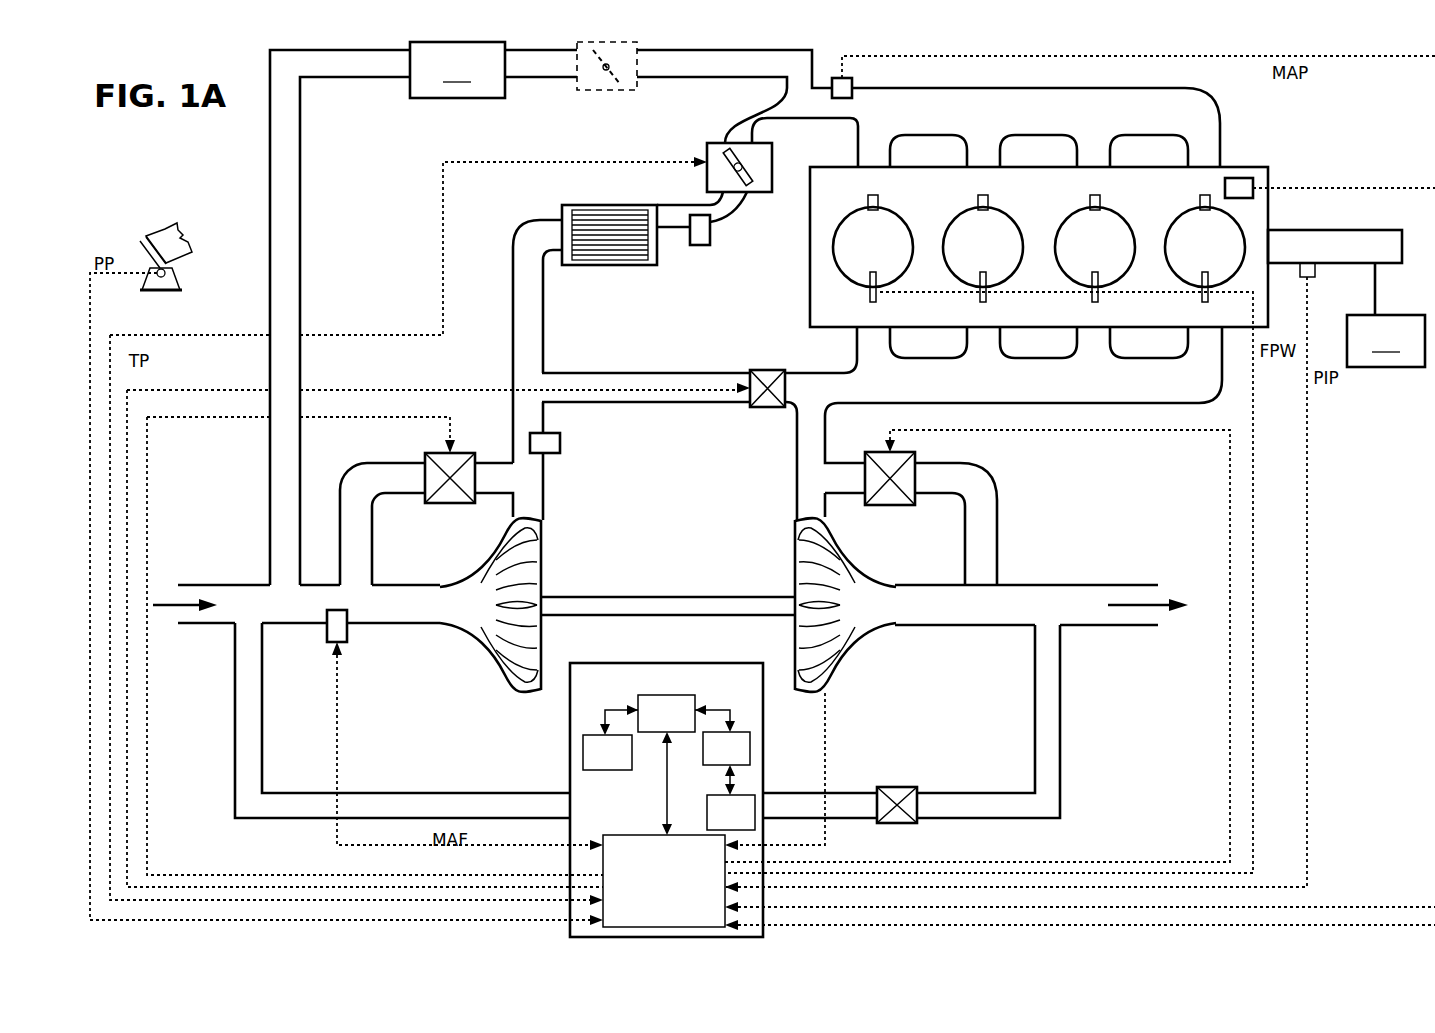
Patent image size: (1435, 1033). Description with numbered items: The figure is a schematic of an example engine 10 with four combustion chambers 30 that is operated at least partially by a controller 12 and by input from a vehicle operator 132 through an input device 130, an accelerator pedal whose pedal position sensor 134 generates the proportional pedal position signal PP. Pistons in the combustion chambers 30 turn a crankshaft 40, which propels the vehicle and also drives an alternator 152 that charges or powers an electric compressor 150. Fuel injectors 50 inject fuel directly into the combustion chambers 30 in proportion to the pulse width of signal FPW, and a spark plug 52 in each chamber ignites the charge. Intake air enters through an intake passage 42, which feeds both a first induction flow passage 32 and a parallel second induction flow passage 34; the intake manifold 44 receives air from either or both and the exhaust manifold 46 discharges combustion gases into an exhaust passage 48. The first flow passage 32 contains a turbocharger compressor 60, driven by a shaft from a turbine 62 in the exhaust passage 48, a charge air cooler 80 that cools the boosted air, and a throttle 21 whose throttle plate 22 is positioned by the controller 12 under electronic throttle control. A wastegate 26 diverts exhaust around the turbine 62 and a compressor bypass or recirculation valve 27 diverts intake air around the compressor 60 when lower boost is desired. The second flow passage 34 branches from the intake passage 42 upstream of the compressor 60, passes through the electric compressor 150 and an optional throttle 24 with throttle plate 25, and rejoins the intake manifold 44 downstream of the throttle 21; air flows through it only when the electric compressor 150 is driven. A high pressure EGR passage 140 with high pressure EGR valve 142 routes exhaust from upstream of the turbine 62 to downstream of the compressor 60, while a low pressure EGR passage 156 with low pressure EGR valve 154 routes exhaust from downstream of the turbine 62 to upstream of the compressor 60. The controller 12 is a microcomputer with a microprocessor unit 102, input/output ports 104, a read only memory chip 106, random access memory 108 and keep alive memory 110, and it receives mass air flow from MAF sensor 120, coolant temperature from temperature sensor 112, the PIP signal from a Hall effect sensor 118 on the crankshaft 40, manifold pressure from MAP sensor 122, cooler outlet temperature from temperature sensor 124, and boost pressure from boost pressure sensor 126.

The engine 10 is at (1127, 192).
The controller 12 is at (597, 815).
The throttle 21 is at (717, 142).
The throttle plate 22 is at (755, 180).
The throttle 24 is at (577, 82).
The throttle plate 25 is at (637, 88).
The wastegate 26 is at (915, 463).
The compressor bypass or recirculation valve 27 is at (425, 462).
The combustion chambers 30 is at (862, 257).
The first induction flow passage 32 is at (543, 342).
The second induction flow passage 34 is at (302, 263).
The crankshaft 40 is at (1283, 230).
The intake passage 42 is at (223, 615).
The intake manifold 44 is at (886, 120).
The exhaust manifold 46 is at (857, 393).
The exhaust passage 48 is at (938, 615).
The fuel injectors 50 is at (870, 298).
The spark plug 52 is at (878, 200).
The compressor 60 is at (477, 660).
The turbine 62 is at (835, 553).
The charge air cooler 80 is at (568, 205).
The microprocessor unit 102 is at (638, 703).
The input/output ports 104 is at (680, 925).
The read only memory chip 106 is at (583, 760).
The random access memory 108 is at (750, 737).
The keep alive memory 110 is at (755, 798).
The temperature sensor 112 is at (1240, 178).
The Hall effect sensor 118 is at (1300, 277).
The MAF sensor 120 is at (347, 632).
The MAP sensor 122 is at (846, 80).
The temperature sensor 124 is at (707, 248).
The boost pressure sensor 126 is at (560, 443).
The input device 130 is at (140, 250).
The vehicle operator 132 is at (193, 242).
The pedal position sensor 134 is at (172, 276).
The high pressure EGR passage 140 is at (647, 373).
The high pressure EGR valve 142 is at (768, 370).
The electric compressor 150 is at (457, 70).
The alternator 152 is at (1386, 341).
The low pressure EGR valve 154 is at (897, 787).
The low pressure EGR passage 156 is at (1062, 793).